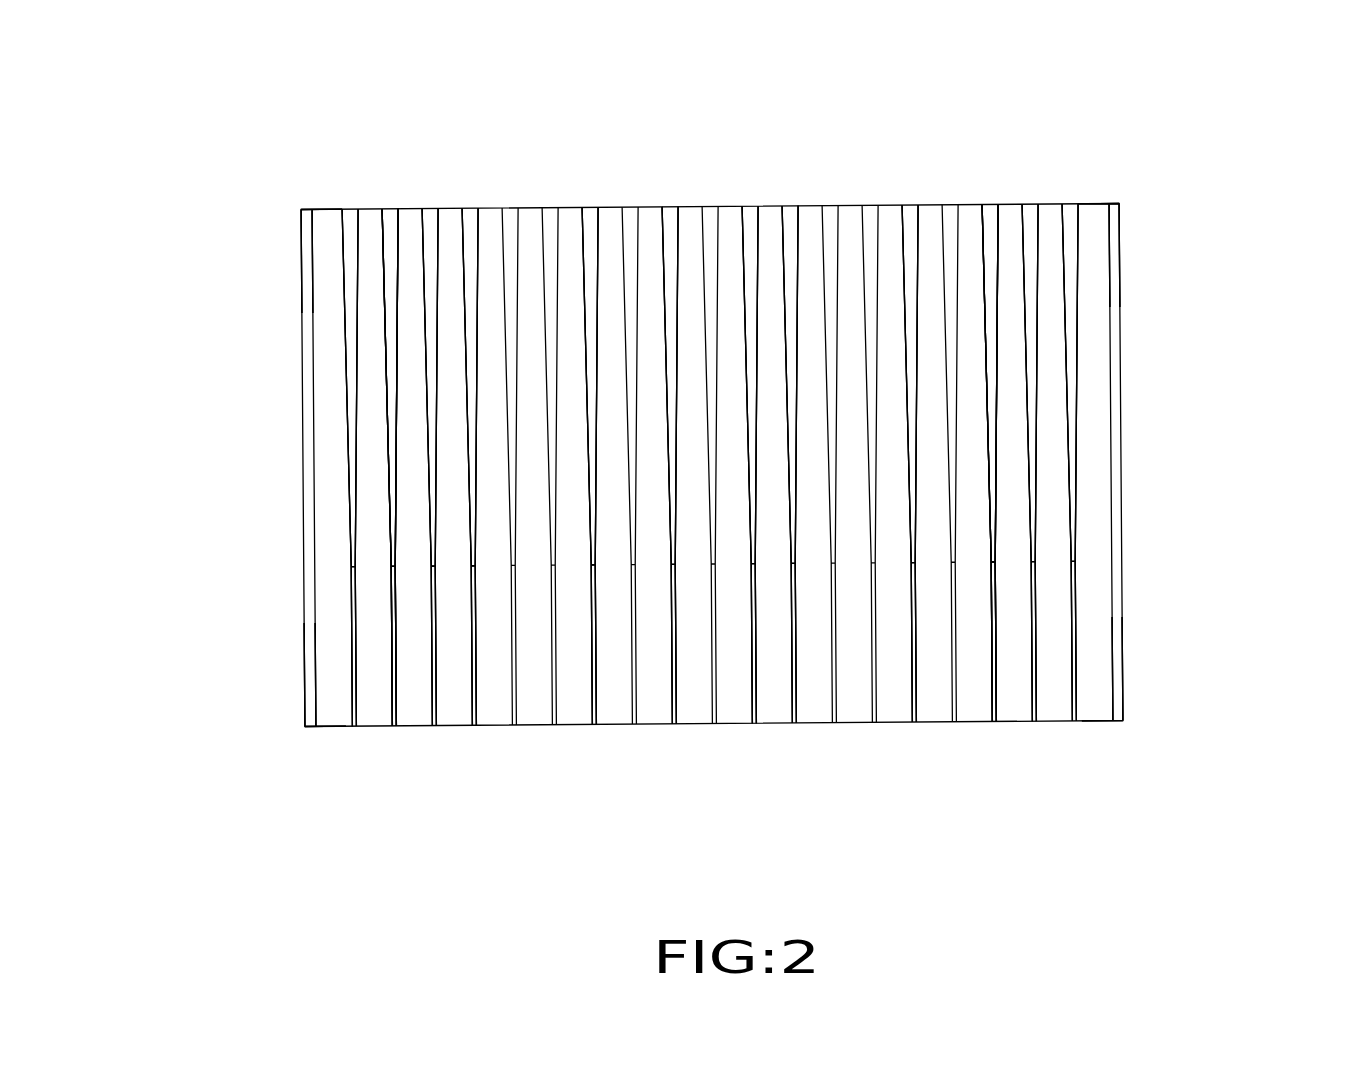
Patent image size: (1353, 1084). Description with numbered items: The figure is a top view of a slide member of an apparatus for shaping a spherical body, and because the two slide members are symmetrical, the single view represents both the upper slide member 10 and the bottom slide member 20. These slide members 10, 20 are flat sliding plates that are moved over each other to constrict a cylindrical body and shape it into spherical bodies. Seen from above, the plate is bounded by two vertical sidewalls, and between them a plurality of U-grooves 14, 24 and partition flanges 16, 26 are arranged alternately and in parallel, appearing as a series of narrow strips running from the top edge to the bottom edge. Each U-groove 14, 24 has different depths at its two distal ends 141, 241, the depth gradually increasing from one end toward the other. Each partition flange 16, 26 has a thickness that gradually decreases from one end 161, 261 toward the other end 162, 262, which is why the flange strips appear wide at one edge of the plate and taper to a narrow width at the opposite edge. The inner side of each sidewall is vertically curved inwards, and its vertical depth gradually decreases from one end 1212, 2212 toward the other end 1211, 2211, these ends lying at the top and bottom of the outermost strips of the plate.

The upper slide member 10 is at (1333, 638).
The bottom slide member 20 is at (1143, 565).
The U-groove 14 is at (372, 358).
The U-groove 24 is at (372, 358).
The distal end of U-groove 141 is at (452, 222).
The distal end of U-groove 241 is at (452, 222).
The partition flange 16 is at (393, 510).
The partition flange 26 is at (393, 510).
The end of partition flange 161 is at (592, 222).
The end of partition flange 261 is at (592, 222).
The end of partition flange 162 is at (673, 700).
The end of partition flange 262 is at (673, 700).
The end of inner side of sidewall 1211 is at (333, 700).
The end of inner side of sidewall 2211 is at (333, 700).
The end of inner side of sidewall 1212 is at (330, 222).
The end of inner side of sidewall 2212 is at (330, 222).